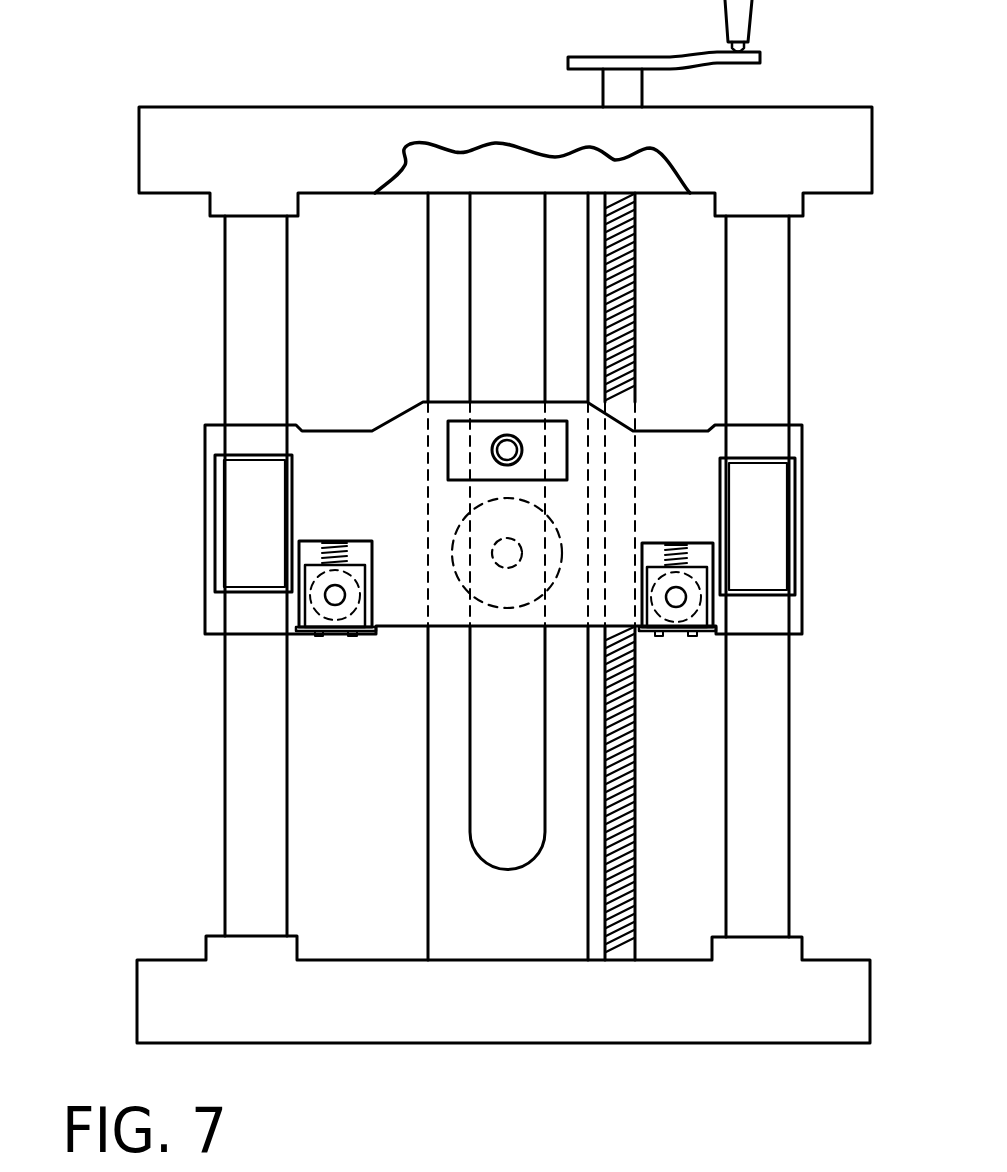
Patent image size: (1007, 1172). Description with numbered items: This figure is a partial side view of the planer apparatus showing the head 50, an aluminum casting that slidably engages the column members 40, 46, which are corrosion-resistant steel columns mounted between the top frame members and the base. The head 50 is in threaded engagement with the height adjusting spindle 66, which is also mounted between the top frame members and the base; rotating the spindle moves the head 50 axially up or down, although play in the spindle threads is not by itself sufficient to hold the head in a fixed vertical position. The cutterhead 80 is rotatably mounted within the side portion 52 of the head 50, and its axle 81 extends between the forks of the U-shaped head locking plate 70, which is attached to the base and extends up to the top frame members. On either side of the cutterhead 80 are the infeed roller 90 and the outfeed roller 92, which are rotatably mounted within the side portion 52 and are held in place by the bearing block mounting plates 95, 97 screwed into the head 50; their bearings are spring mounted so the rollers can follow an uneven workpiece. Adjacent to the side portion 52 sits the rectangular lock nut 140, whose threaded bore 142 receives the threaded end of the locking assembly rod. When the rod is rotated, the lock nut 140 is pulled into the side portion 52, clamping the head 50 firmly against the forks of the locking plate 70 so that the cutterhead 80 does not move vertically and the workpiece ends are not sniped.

The column member 40 is at (222, 856).
The column member 46 is at (790, 867).
The head 50 is at (467, 535).
The side portion 52 is at (787, 442).
The height adjusting spindle 66 is at (637, 813).
The head locking plate 70 is at (487, 916).
The cutterhead 80 is at (487, 603).
The axle 81 is at (498, 566).
The infeed roller 90 is at (347, 573).
The outfeed roller 92 is at (692, 577).
The bearing block mounting plate 95 is at (333, 632).
The bearing block mounting plate 97 is at (678, 638).
The lock nut 140 is at (447, 440).
The threaded bore 142 is at (501, 433).